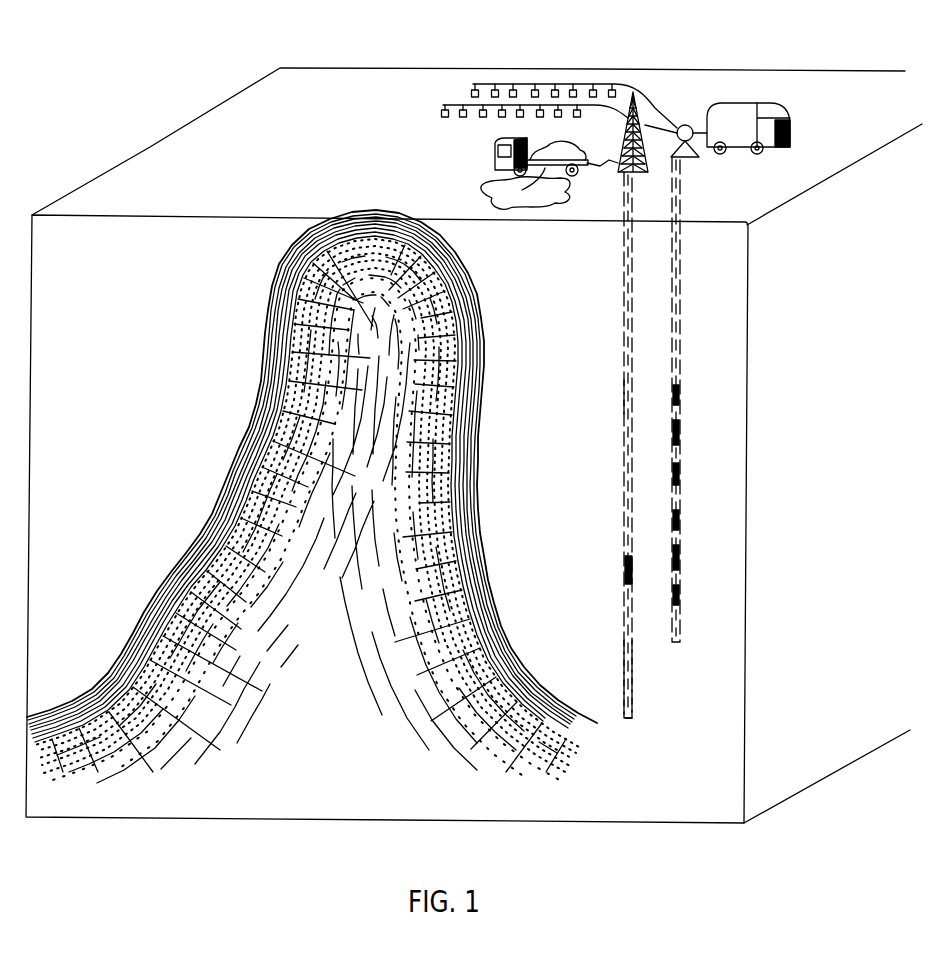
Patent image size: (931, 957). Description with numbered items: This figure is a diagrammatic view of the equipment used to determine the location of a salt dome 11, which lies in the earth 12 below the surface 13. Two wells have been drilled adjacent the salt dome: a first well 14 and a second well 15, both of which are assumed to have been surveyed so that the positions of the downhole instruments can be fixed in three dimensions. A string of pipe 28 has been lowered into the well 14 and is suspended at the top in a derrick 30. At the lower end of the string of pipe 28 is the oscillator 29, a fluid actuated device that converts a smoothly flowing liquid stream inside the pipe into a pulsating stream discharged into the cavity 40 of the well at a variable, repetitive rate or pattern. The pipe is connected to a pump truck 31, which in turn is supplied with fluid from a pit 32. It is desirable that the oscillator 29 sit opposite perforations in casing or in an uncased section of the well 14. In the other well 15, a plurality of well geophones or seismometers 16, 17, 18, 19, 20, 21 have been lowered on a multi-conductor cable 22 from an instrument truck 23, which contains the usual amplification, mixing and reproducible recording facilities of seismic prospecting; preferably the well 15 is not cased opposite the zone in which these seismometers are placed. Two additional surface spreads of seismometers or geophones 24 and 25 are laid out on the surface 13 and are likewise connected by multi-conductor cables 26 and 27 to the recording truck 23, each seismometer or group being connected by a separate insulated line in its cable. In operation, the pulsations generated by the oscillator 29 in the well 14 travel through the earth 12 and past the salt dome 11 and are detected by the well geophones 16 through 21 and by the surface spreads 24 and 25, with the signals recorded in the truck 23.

The salt dome 11 is at (240, 428).
The earth 12 is at (137, 320).
The surface 13 is at (202, 128).
The well 14 is at (623, 250).
The well 15 is at (681, 260).
The well geophone 16 is at (673, 393).
The well geophone 17 is at (680, 432).
The well geophone 18 is at (680, 475).
The well geophone 19 is at (680, 520).
The well geophone 20 is at (680, 560).
The well geophone 21 is at (680, 598).
The multi-conductor cable 22 is at (678, 305).
The instrument truck 23 is at (730, 110).
The surface spread of seismometers 24 is at (489, 124).
The surface spread of seismometers 25 is at (552, 84).
The multi-conductor cable 26 is at (619, 108).
The multi-conductor cable 27 is at (650, 103).
The string of pipe 28 is at (624, 400).
The oscillator 29 is at (626, 570).
The derrick 30 is at (618, 162).
The pump truck 31 is at (495, 152).
The pit 32 is at (510, 196).
The cavity of the well 40 is at (624, 660).